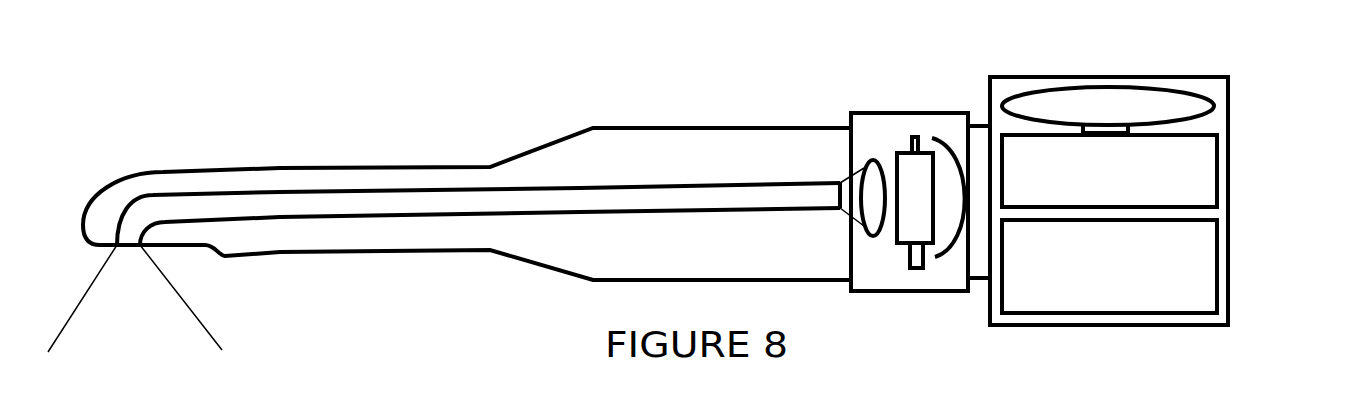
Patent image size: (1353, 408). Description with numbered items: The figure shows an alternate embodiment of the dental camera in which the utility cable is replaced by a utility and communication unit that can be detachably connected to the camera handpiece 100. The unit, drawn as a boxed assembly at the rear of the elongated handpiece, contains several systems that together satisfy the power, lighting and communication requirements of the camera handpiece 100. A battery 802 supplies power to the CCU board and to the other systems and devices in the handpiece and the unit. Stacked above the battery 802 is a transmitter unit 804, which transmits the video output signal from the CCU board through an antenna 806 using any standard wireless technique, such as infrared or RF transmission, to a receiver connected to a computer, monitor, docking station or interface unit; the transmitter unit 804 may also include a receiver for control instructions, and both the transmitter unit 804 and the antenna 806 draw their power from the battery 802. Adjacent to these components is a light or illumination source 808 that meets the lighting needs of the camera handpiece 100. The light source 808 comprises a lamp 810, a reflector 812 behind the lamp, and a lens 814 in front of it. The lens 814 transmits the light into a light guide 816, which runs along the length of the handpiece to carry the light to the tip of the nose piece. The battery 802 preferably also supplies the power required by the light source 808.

The camera handpiece 100 is at (408, 102).
The battery 802 is at (1195, 262).
The transmitter unit 804 is at (1197, 172).
The antenna 806 is at (1183, 110).
The light source 808 is at (927, 113).
The lamp 810 is at (858, 291).
The reflector 812 is at (947, 252).
The lens 814 is at (884, 160).
The light guide 816 is at (632, 215).